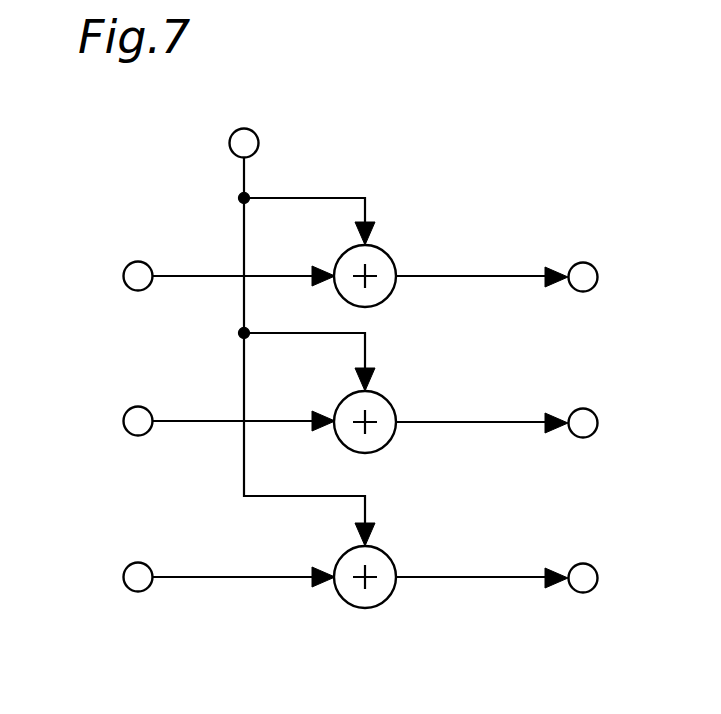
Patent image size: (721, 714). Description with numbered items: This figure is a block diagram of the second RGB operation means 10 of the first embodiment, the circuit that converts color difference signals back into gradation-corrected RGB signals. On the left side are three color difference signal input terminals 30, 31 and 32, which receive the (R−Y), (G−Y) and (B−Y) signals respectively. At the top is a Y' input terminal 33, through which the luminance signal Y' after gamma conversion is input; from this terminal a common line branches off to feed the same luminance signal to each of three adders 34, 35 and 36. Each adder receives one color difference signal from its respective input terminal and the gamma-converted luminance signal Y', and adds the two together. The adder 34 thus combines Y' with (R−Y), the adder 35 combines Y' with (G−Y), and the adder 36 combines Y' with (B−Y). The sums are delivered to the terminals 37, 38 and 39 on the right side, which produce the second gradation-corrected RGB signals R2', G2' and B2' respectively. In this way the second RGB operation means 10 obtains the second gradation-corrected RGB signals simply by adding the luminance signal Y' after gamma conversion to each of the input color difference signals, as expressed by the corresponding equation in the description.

The second RGB operation means 10 is at (462, 246).
The color difference signal input terminal 30 is at (149, 289).
The color difference signal input terminal 31 is at (149, 434).
The color difference signal input terminal 32 is at (149, 590).
The Y' input terminal 33 is at (259, 143).
The adder 34 is at (388, 296).
The adder 35 is at (388, 442).
The adder 36 is at (388, 597).
The terminal 37 is at (587, 291).
The terminal 38 is at (587, 437).
The terminal 39 is at (587, 592).